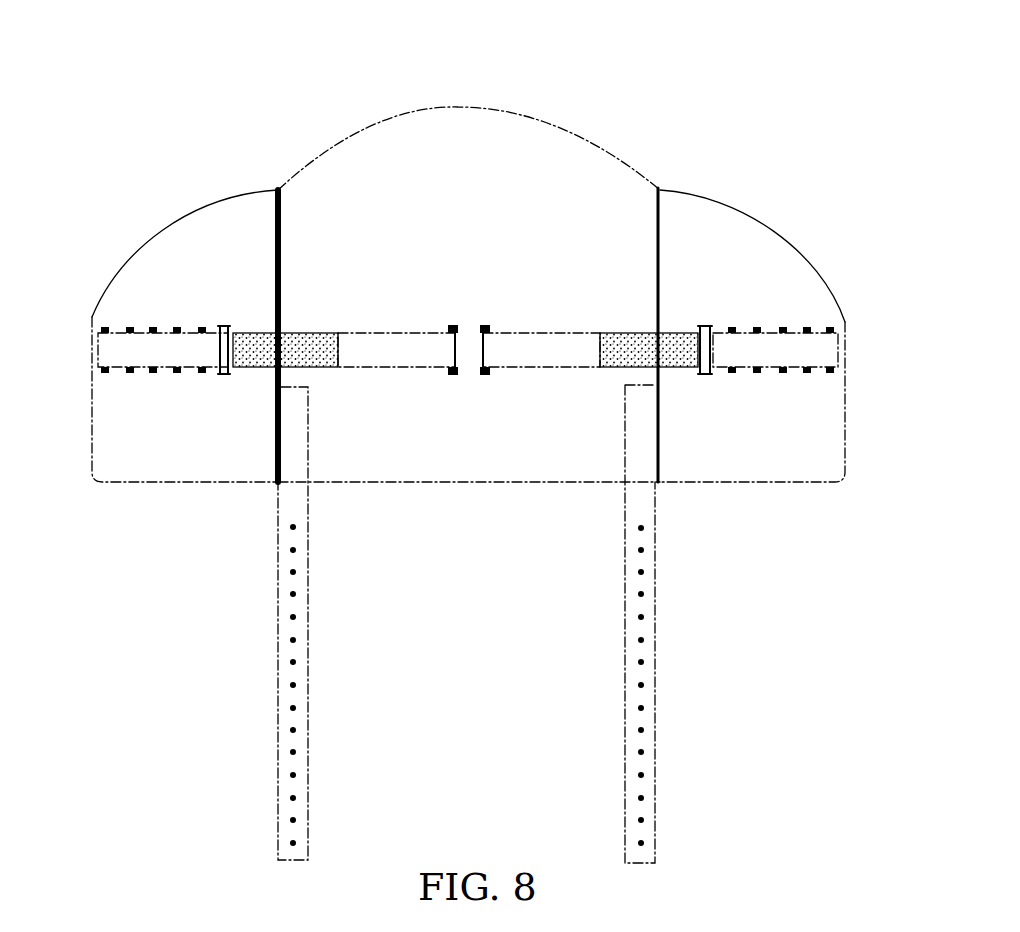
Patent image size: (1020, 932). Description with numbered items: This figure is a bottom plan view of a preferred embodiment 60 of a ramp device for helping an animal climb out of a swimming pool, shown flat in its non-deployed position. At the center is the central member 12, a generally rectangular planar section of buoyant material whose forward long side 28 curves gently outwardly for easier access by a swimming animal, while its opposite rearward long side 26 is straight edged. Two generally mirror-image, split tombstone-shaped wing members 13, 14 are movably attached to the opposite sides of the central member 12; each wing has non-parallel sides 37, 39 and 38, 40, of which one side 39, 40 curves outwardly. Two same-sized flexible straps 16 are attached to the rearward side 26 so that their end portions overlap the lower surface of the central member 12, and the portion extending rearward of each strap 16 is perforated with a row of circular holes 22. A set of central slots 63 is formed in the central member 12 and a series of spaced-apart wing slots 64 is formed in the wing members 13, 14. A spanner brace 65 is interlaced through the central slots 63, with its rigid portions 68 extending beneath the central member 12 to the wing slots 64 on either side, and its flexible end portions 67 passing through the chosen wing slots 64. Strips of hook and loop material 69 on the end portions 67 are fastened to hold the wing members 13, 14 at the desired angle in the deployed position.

The central member 12 is at (483, 443).
The left wing member 13 is at (195, 443).
The right wing member 14 is at (770, 438).
The flexible straps 16 is at (300, 617).
The circular holes 22 is at (293, 729).
The rearward long side 26 is at (450, 482).
The forward long side 28 is at (458, 110).
The non-parallel side of left wing member 37 is at (158, 482).
The non-parallel side of right wing member 38 is at (753, 482).
The curved side of left wing member 39 is at (200, 213).
The curved side of right wing member 40 is at (713, 208).
The ramp device embodiment 60 is at (613, 111).
The central slots 63 is at (452, 327).
The wing slots 64 is at (177, 328).
The spanner brace 65 is at (380, 348).
The end portions of spanner brace 67 is at (120, 332).
The rigid portions of spanner brace 68 is at (545, 348).
The hook and loop strips 69 is at (302, 340).